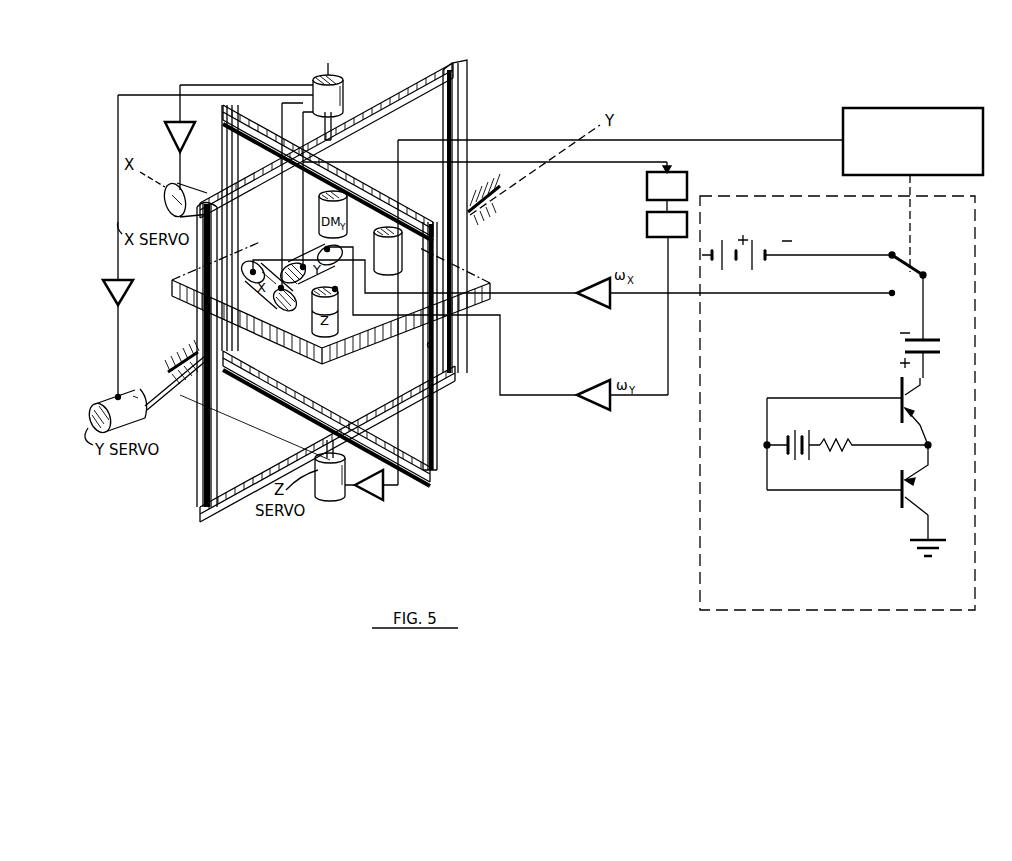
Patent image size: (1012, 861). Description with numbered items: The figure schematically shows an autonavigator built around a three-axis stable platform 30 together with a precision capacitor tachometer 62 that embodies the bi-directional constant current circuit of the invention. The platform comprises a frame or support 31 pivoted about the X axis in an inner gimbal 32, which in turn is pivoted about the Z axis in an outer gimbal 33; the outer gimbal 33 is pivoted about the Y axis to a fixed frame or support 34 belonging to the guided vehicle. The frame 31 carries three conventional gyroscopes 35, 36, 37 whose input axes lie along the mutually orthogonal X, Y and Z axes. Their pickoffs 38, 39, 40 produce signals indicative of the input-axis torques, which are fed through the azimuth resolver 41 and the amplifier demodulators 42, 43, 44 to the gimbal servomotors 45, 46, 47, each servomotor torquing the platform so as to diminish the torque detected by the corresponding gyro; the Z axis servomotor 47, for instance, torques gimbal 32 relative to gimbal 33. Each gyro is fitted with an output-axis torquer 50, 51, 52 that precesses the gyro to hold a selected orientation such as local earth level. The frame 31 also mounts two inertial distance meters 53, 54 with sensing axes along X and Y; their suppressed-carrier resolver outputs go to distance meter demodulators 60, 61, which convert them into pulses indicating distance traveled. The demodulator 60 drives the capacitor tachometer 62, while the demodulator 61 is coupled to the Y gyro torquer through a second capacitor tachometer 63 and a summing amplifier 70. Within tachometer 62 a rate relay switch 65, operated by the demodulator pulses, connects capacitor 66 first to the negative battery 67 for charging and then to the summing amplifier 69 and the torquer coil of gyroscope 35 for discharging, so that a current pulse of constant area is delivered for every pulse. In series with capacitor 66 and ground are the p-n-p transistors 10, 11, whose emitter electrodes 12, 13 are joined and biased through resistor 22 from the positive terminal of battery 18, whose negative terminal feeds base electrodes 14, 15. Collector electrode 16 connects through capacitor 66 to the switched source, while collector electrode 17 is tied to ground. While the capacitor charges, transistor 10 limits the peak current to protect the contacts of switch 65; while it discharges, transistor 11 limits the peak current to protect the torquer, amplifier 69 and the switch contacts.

The stable platform 30 is at (478, 141).
The frame or support 31 is at (366, 352).
The inner gimbal 32 is at (223, 130).
The outer gimbal 33 is at (220, 440).
The fixed frame or support 34 is at (500, 200).
The X axis gyroscope 35 is at (262, 306).
The Y axis gyroscope 36 is at (302, 266).
The Z axis gyroscope 37 is at (339, 316).
The pickoff 38 is at (288, 312).
The pickoff 39 is at (280, 286).
The pickoff 40 is at (276, 362).
The azimuth resolver 41 is at (344, 100).
The amplifier demodulator 42 is at (167, 124).
The amplifier demodulator 43 is at (108, 288).
The amplifier demodulator 44 is at (374, 500).
The X axis servomotor 45 is at (166, 207).
The Y axis servomotor 46 is at (96, 402).
The Z axis servomotor 47 is at (344, 480).
The torquer 50 is at (252, 272).
The torquer 51 is at (326, 247).
The torquer 52 is at (343, 288).
The distance meter 53 is at (384, 238).
The distance meter 54 is at (330, 249).
The distance meter demodulator 60 is at (890, 110).
The distance meter demodulator 61 is at (682, 182).
The capacitor tachometer 62 is at (975, 238).
The second capacitor tachometer 63 is at (645, 222).
The rate relay switch 65 is at (916, 265).
The capacitor 66 is at (930, 340).
The battery 67 is at (758, 240).
The summing amplifier 69 is at (587, 284).
The summing amplifier 70 is at (590, 386).
The p-n-p transistor 10 is at (936, 408).
The p-n-p transistor 11 is at (935, 501).
The emitter electrode 12 is at (922, 425).
The emitter electrode 13 is at (923, 474).
The base electrode 14 is at (898, 390).
The base electrode 15 is at (900, 483).
The collector electrode 16 is at (922, 392).
The collector electrode 17 is at (915, 512).
The battery 18 is at (797, 428).
The resistor 22 is at (838, 441).